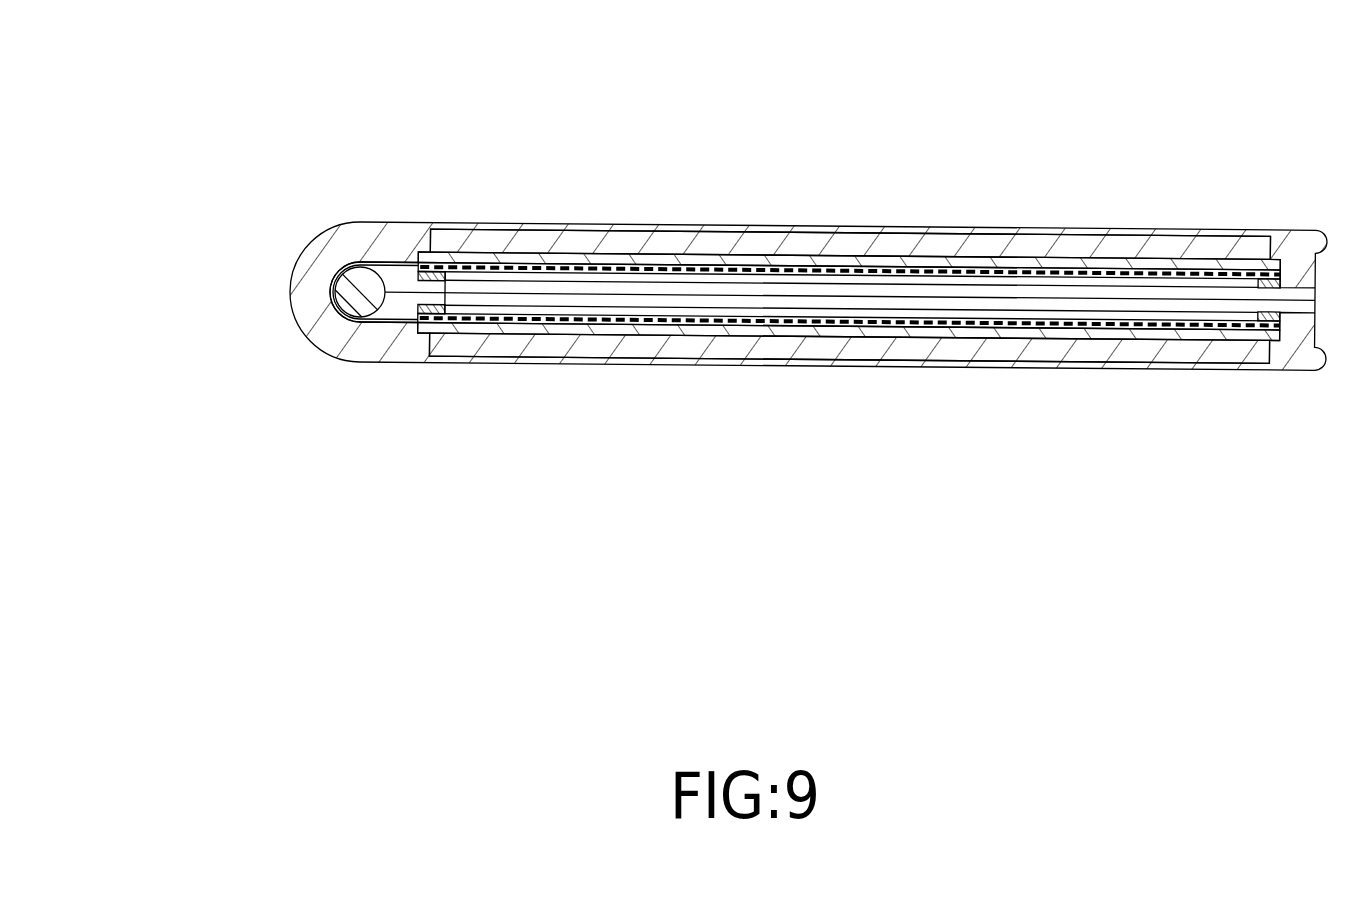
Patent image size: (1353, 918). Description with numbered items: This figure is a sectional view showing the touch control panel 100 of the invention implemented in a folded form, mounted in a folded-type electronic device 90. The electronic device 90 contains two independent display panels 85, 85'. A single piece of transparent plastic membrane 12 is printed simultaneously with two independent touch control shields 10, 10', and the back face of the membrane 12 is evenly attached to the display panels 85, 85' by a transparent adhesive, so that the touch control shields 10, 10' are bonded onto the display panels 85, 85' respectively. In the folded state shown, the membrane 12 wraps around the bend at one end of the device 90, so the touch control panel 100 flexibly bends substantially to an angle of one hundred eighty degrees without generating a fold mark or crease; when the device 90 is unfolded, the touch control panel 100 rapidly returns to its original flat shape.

The touch control panel 100 is at (336, 268).
The folded-type electronic device 90 is at (402, 237).
The display panel 85 is at (849, 167).
The display panel 85' is at (849, 443).
The touch control shield 10 is at (849, 392).
The touch control shield 10' is at (849, 198).
The transparent plastic membrane 12 is at (390, 323).